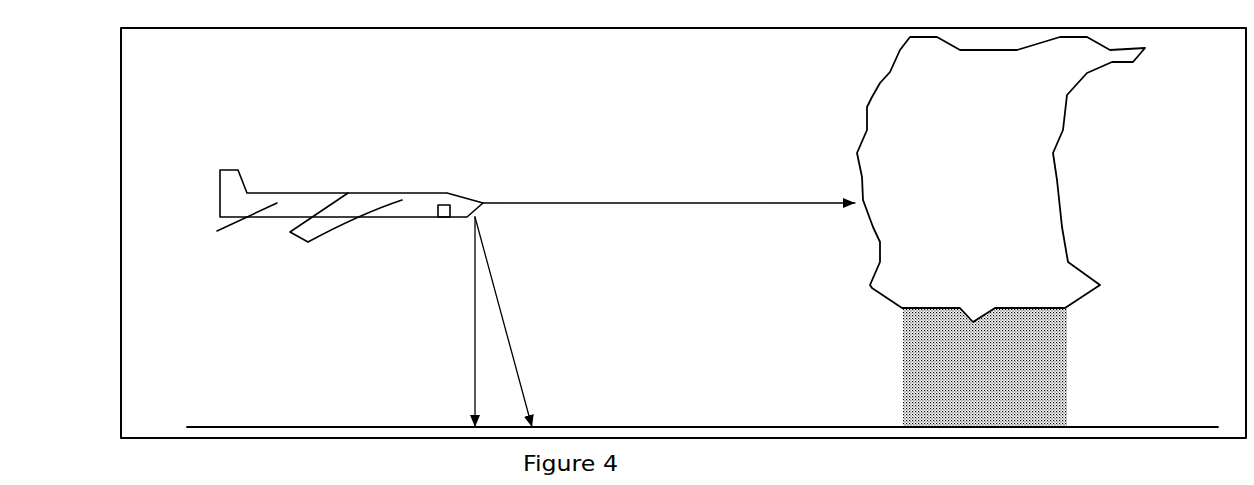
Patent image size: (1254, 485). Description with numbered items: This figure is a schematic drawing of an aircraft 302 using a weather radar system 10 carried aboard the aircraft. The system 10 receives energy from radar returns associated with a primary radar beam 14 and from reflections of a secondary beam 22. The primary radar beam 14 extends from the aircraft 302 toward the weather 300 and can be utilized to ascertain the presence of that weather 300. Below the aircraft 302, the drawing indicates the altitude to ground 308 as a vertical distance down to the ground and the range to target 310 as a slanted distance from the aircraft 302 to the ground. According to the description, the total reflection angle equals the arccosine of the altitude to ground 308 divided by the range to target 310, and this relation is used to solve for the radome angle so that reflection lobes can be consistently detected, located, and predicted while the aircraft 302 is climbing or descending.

The aircraft 302 is at (280, 215).
The system 10 is at (450, 218).
The primary radar beam 14 is at (620, 203).
The secondary beam 22 is at (527, 287).
The altitude to ground 308 is at (478, 382).
The range to target 310 is at (525, 382).
The weather 300 is at (1077, 238).